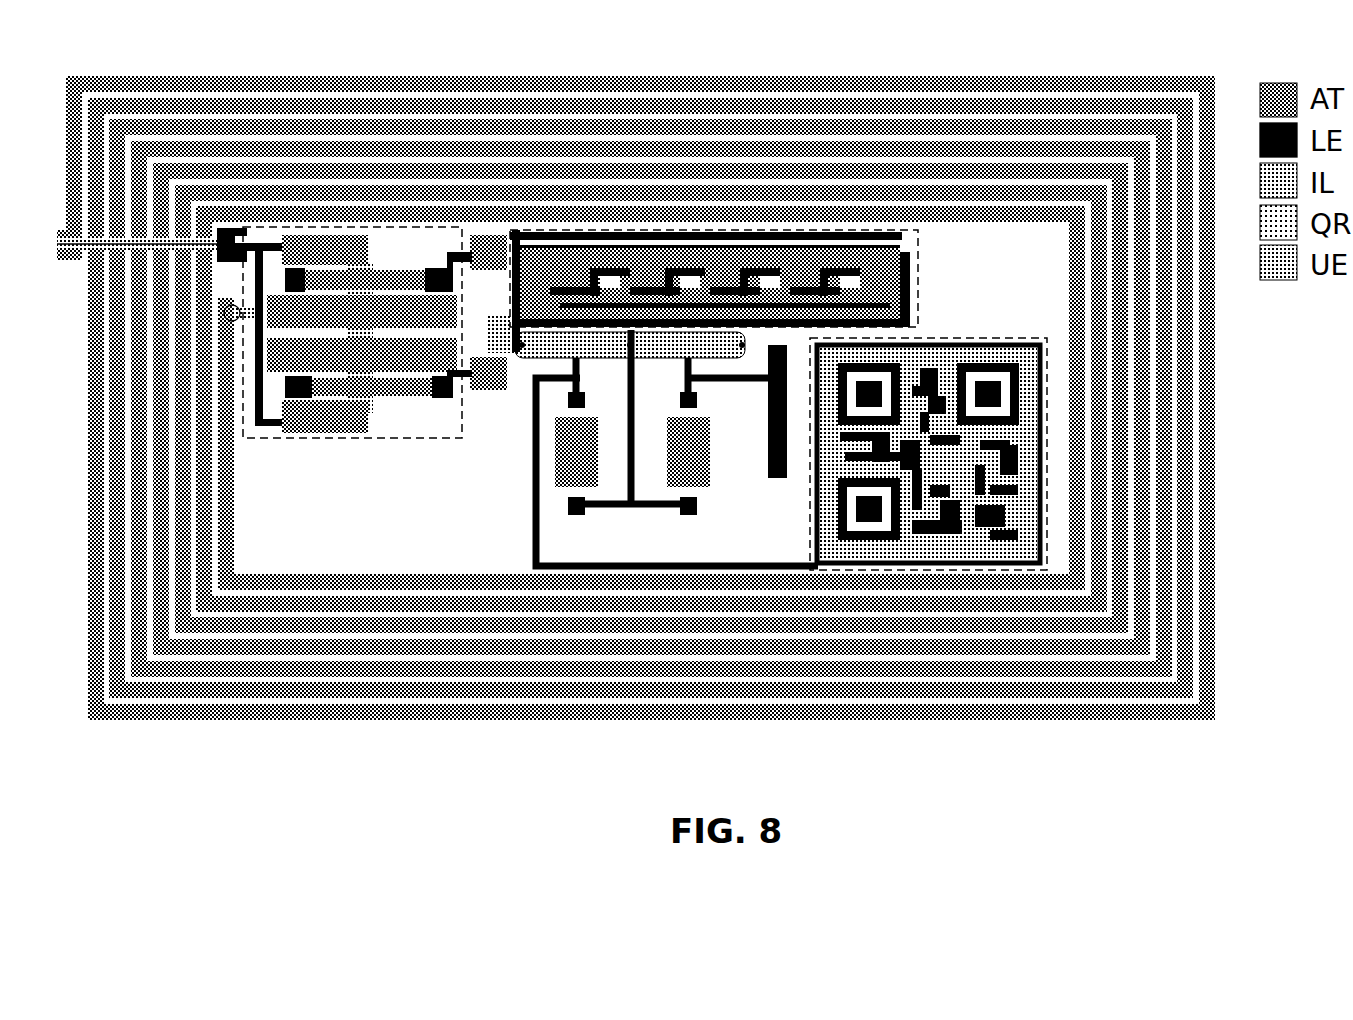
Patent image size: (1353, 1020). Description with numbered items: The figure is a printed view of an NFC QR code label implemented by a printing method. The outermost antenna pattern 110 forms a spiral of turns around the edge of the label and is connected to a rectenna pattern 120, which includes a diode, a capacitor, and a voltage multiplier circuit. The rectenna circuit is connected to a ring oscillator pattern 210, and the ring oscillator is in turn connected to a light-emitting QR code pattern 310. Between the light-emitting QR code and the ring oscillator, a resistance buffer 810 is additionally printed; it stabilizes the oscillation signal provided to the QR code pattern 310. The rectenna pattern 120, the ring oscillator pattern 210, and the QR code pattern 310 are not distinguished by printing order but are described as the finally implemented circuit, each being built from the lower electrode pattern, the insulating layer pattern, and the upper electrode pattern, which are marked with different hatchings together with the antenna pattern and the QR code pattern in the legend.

The antenna pattern 110 is at (575, 77).
The rectenna pattern 120 is at (332, 440).
The ring oscillator pattern 210 is at (920, 292).
The light-emitting QR code pattern 310 is at (809, 531).
The resistance buffer 810 is at (535, 490).